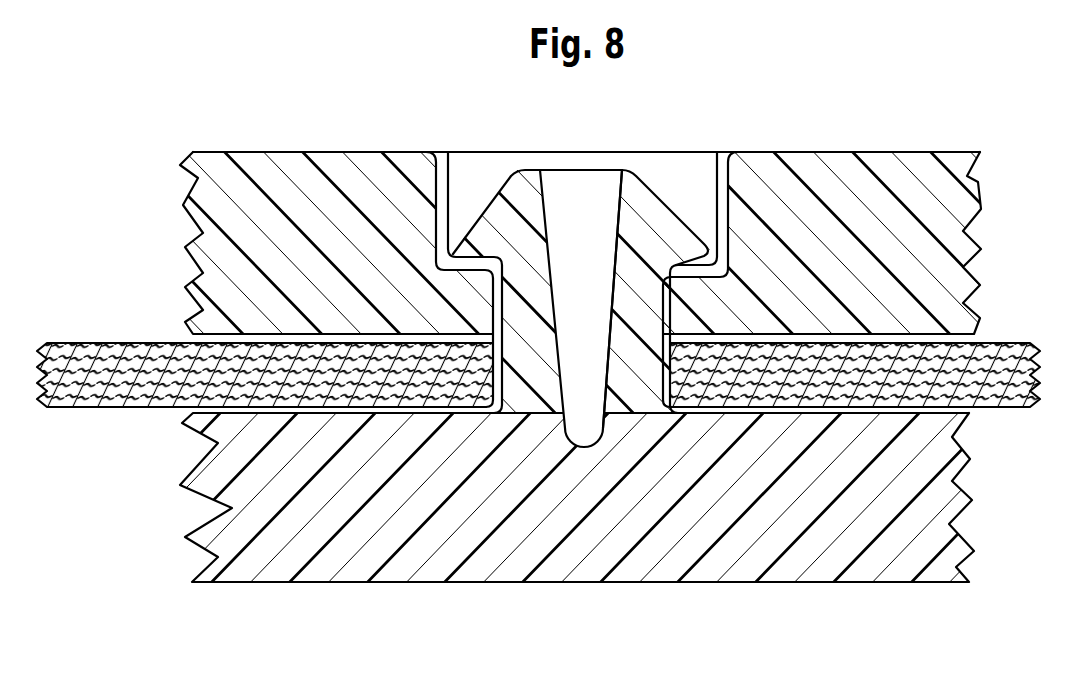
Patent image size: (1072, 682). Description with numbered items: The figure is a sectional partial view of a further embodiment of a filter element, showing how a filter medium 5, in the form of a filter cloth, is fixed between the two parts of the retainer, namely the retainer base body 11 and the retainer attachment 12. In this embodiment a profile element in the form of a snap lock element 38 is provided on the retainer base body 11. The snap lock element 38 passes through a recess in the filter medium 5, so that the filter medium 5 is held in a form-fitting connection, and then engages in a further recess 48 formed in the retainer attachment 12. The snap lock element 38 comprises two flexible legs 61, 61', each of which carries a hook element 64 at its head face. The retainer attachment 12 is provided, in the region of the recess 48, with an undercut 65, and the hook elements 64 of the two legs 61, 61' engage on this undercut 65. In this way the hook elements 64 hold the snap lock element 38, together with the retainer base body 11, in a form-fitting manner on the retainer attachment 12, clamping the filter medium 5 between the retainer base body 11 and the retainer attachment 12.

The filter medium 5 is at (102, 362).
The retainer base body 11 is at (348, 566).
The retainer attachment 12 is at (266, 167).
The snap lock element 38 is at (667, 168).
The recess 48 is at (703, 190).
The flexible leg 61 is at (581, 270).
The flexible leg 61' is at (605, 265).
The hook element 64 is at (507, 208).
The undercut 65 is at (447, 207).